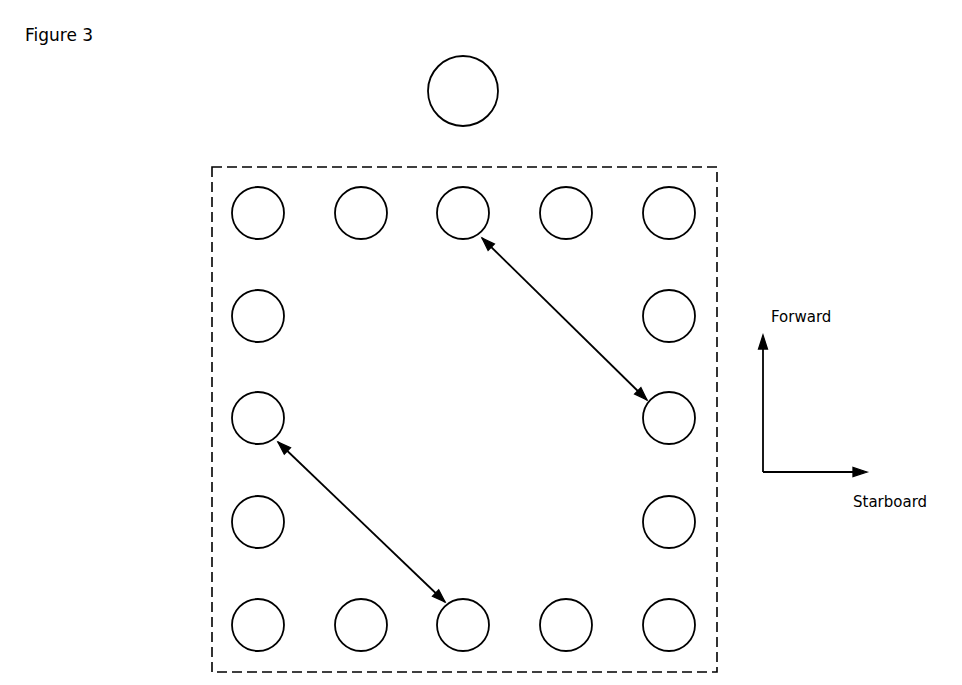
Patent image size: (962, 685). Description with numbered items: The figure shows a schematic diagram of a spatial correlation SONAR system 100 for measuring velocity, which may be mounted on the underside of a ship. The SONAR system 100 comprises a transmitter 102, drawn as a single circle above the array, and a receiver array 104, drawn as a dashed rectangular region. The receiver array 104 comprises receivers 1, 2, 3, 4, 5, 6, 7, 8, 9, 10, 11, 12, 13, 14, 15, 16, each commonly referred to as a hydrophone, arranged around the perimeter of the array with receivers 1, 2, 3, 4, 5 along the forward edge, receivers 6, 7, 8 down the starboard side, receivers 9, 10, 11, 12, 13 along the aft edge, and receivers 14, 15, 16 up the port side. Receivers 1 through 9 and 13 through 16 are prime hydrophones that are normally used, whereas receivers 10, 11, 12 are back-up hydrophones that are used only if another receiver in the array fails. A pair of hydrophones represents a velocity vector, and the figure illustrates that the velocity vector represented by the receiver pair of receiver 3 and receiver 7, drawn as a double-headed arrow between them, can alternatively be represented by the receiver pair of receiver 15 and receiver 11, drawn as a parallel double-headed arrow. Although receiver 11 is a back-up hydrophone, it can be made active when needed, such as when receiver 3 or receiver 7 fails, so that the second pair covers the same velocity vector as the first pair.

The SONAR system 100 is at (211, 82).
The transmitter 102 is at (495, 82).
The receiver array 104 is at (501, 403).
The receiver 1 is at (258, 213).
The receiver 2 is at (361, 213).
The receiver 3 is at (463, 213).
The receiver 4 is at (566, 213).
The receiver 5 is at (669, 213).
The receiver 6 is at (669, 316).
The receiver 7 is at (669, 418).
The receiver 8 is at (669, 522).
The receiver 9 is at (669, 625).
The receiver 10 is at (566, 625).
The receiver 11 is at (463, 625).
The receiver 12 is at (361, 625).
The receiver 13 is at (258, 625).
The receiver 14 is at (258, 522).
The receiver 15 is at (258, 418).
The receiver 16 is at (258, 316).